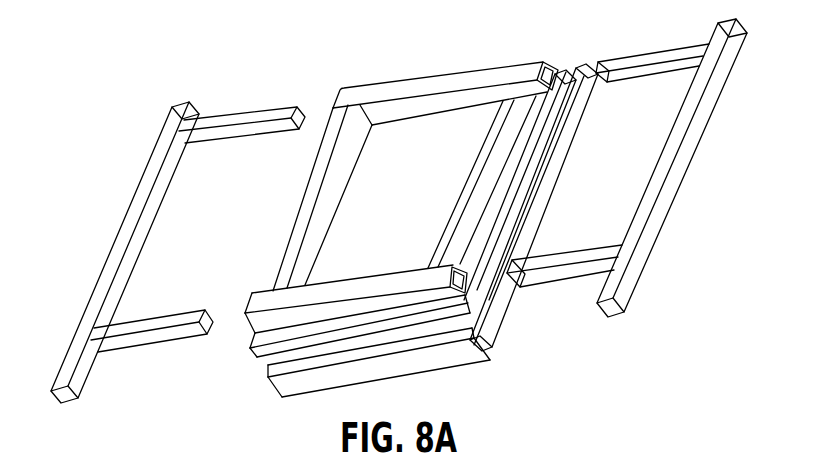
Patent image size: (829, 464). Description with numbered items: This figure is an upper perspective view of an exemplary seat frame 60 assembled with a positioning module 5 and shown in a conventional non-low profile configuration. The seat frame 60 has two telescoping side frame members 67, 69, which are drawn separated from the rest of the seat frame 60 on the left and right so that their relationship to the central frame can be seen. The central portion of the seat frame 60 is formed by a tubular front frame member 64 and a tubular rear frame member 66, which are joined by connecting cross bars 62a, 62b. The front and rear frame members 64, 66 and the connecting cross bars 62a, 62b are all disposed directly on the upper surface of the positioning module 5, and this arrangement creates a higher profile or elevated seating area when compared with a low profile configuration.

The seat frame 60 is at (510, 55).
The rear frame member 66 is at (387, 84).
The connecting cross bar 62a is at (305, 217).
The connecting cross bar 62b is at (490, 168).
The front frame member 64 is at (428, 298).
The telescoping side frame member 67 is at (123, 221).
The telescoping side frame member 69 is at (668, 205).
The positioning module 5 is at (263, 357).